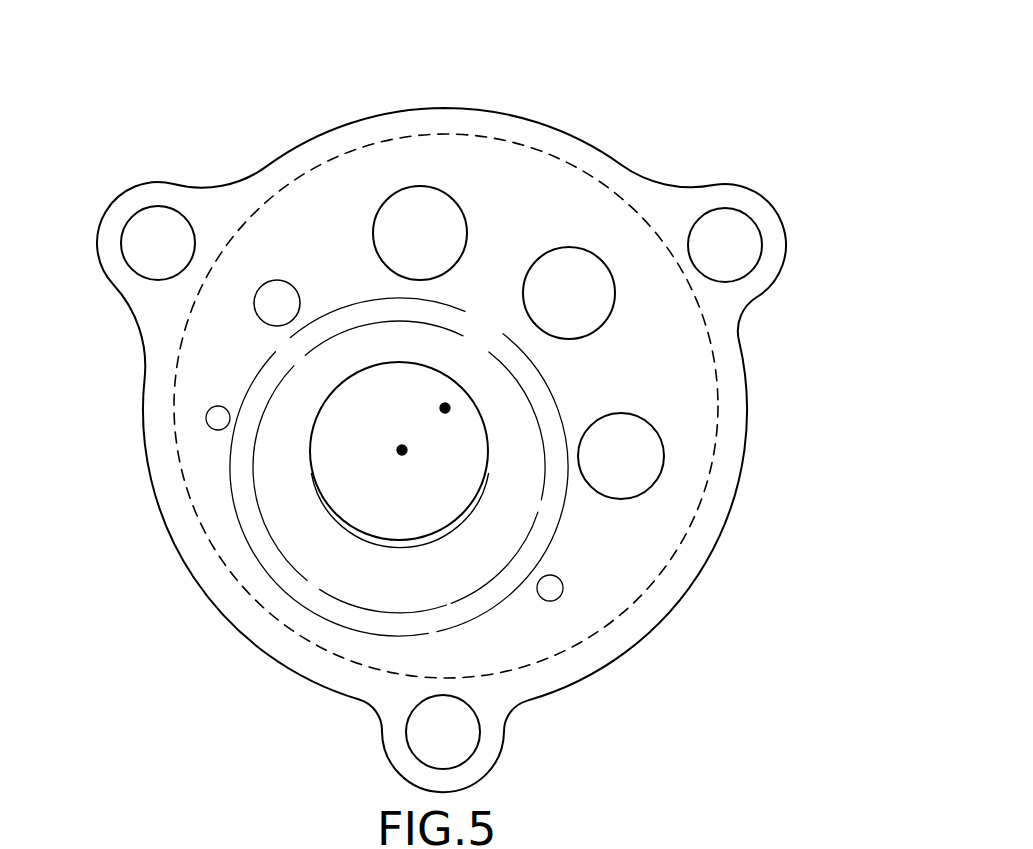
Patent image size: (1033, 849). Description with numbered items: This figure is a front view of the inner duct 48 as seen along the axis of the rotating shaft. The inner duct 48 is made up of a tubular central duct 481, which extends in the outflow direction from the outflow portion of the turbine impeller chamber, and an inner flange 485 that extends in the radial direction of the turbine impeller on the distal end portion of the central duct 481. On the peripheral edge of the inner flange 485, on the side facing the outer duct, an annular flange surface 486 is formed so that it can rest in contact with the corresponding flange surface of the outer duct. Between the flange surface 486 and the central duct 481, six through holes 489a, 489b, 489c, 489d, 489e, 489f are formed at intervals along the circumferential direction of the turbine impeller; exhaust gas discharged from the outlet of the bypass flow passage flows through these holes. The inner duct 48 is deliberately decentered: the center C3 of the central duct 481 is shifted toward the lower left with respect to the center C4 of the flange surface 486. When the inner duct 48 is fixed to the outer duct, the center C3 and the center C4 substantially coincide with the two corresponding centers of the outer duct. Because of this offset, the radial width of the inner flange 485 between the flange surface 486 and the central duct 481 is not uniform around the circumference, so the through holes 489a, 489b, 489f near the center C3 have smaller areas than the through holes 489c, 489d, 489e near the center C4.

The inner duct 48 is at (191, 103).
The central duct 481 is at (463, 353).
The inner flange 485 is at (495, 193).
The flange surface 486 is at (426, 124).
The through hole 489a is at (206, 418).
The through hole 489b is at (257, 308).
The through hole 489c is at (385, 194).
The through hole 489d is at (600, 259).
The through hole 489e is at (660, 433).
The through hole 489f is at (558, 598).
The center of the central duct C3 is at (382, 455).
The center of the flange surface C4 is at (428, 408).